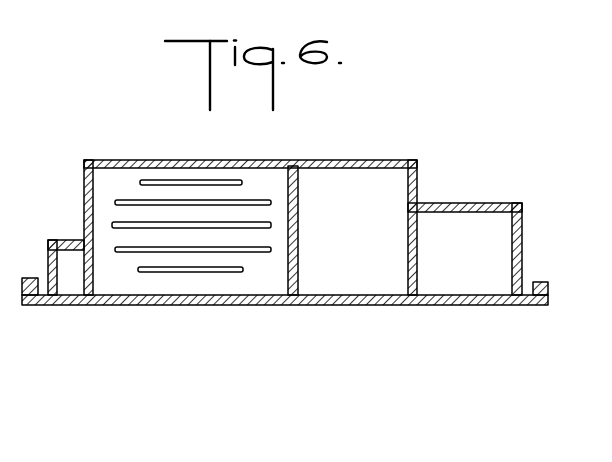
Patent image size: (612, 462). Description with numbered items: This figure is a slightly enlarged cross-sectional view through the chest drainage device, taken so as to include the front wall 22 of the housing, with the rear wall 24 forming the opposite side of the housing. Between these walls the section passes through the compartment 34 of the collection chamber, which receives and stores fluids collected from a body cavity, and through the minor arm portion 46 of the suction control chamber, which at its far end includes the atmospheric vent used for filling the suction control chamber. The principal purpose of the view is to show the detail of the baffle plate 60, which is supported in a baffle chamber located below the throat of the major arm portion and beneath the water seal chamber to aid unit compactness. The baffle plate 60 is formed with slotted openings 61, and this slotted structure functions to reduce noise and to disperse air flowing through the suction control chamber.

The front wall 22 is at (432, 306).
The rear wall 24 is at (283, 165).
The compartment 34 is at (450, 225).
The minor arm portion 46 is at (68, 283).
The baffle plate 60 is at (258, 283).
The slots 61 is at (122, 200).